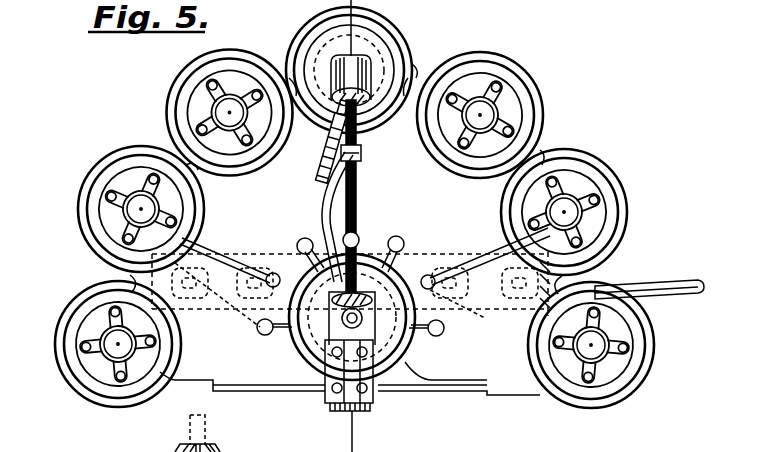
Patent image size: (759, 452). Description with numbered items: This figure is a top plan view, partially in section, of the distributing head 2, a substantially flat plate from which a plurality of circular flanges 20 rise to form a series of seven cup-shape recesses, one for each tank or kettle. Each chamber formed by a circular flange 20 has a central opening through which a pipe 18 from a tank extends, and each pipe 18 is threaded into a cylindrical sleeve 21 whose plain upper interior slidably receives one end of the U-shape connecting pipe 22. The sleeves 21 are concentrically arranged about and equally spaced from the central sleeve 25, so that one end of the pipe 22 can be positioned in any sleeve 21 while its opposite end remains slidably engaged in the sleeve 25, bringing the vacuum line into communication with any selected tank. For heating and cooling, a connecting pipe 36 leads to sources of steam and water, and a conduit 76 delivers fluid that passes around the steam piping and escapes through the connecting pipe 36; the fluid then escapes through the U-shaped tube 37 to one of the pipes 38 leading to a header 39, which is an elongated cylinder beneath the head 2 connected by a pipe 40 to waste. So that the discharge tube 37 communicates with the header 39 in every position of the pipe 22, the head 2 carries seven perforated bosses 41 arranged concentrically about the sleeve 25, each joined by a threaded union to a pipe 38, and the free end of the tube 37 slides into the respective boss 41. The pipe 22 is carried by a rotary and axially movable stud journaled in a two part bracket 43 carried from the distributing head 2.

The distributing head 2 is at (255, 365).
The pipe 18 is at (213, 109).
The circular flange 20 is at (264, 63).
The cylindrical sleeve 21 is at (226, 93).
The U-shape connecting pipe 22 is at (376, 60).
The sleeve 25 is at (405, 350).
The connecting pipe 36 is at (318, 168).
The U-shaped discharge tube 37 is at (360, 238).
The pipe 38 is at (223, 306).
The header 39 is at (430, 254).
The pipe 40 is at (665, 281).
The perforated boss 41 is at (270, 334).
The bracket 43 is at (336, 400).
The conduit 76 is at (350, 172).